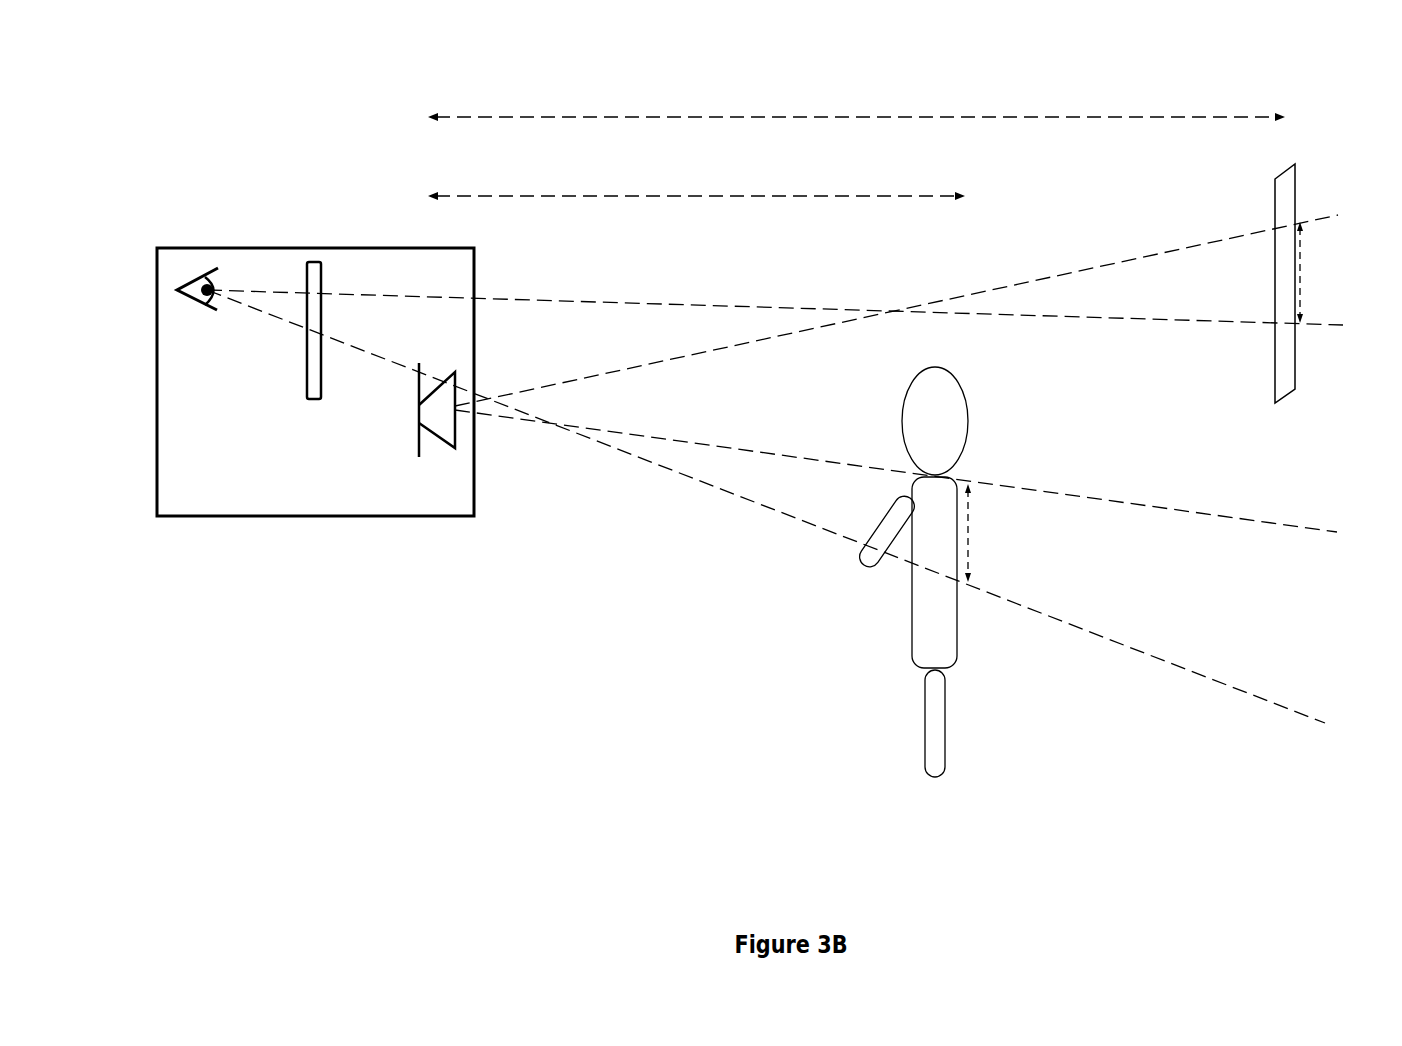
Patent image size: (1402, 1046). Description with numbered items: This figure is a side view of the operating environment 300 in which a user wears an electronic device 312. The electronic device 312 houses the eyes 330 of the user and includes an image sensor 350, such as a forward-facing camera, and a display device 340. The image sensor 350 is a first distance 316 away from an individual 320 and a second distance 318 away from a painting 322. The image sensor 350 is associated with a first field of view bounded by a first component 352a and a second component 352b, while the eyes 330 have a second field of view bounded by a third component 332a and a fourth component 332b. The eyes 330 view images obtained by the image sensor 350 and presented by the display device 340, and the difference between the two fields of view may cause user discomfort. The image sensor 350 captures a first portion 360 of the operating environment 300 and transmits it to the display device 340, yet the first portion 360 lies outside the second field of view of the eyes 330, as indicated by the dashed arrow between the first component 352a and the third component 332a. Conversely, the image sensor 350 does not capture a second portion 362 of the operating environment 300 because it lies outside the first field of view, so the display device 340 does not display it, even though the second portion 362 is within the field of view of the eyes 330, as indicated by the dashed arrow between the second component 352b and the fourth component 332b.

The operating environment 300 is at (286, 72).
The electronic device 312 is at (157, 261).
The first distance 316 is at (586, 196).
The second distance 318 is at (572, 117).
The individual 320 is at (912, 615).
The painting 322 is at (1275, 366).
The eyes 330 is at (183, 296).
The third component 332a is at (287, 292).
The fourth component 332b is at (258, 308).
The display device 340 is at (325, 305).
The image sensor 350 is at (419, 405).
The first component 352a is at (572, 382).
The second component 352b is at (512, 424).
The first portion 360 is at (1300, 263).
The second portion 362 is at (970, 561).